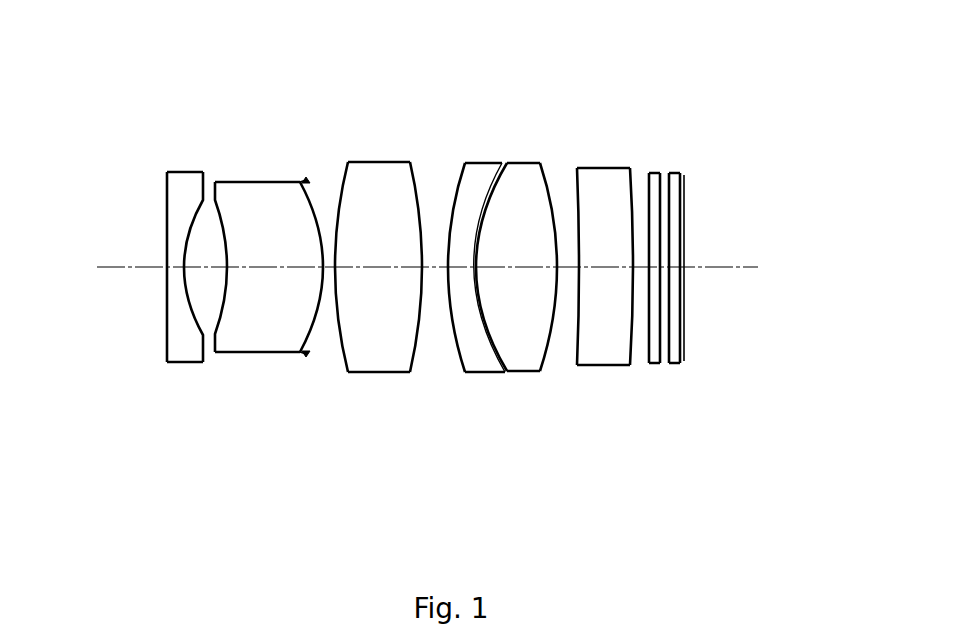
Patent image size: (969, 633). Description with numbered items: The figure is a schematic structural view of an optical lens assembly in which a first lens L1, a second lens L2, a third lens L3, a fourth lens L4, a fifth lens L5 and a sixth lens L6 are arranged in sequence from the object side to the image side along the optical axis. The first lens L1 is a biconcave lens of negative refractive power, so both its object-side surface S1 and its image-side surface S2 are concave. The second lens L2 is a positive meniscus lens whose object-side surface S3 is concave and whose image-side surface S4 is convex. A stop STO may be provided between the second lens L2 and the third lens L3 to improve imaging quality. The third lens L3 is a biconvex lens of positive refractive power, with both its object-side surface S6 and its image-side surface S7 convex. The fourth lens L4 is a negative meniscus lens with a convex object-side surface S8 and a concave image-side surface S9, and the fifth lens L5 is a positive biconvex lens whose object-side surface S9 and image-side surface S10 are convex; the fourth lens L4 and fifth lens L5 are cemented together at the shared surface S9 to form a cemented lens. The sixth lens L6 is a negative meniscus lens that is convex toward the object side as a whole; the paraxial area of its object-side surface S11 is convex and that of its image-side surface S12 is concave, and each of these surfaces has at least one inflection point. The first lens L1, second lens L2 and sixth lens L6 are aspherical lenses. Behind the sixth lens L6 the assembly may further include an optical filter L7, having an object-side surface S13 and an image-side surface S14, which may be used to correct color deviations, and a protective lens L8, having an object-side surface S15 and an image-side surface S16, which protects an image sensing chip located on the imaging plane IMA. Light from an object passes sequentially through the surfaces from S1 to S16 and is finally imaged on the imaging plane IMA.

The first lens L1 is at (178, 333).
The second lens L2 is at (258, 333).
The third lens L3 is at (378, 352).
The fourth lens L4 is at (468, 340).
The fifth lens L5 is at (522, 342).
The sixth lens L6 is at (603, 337).
The optical filter L7 is at (656, 358).
The protective lens L8 is at (674, 358).
The stop STO is at (305, 181).
The imaging plane IMA is at (685, 237).
The object-side surface of the first lens S1 is at (168, 213).
The image-side surface of the first lens S2 is at (195, 216).
The object-side surface of the second lens S3 is at (218, 186).
The image-side surface of the second lens S4 is at (297, 183).
The object-side surface of the third lens S6 is at (340, 188).
The image-side surface of the third lens S7 is at (410, 161).
The object-side surface of the fourth lens S8 is at (456, 195).
The image-side surface of the fourth lens / object-side surface of the fifth lens S9 is at (485, 195).
The image-side surface of the fifth lens S10 is at (551, 200).
The object-side surface of the sixth lens S11 is at (579, 200).
The image-side surface of the sixth lens S12 is at (632, 200).
The object-side surface of the optical filter S13 is at (650, 173).
The image-side surface of the optical filter S14 is at (661, 173).
The object-side surface of the protective lens S15 is at (670, 173).
The image-side surface of the protective lens S16 is at (682, 175).